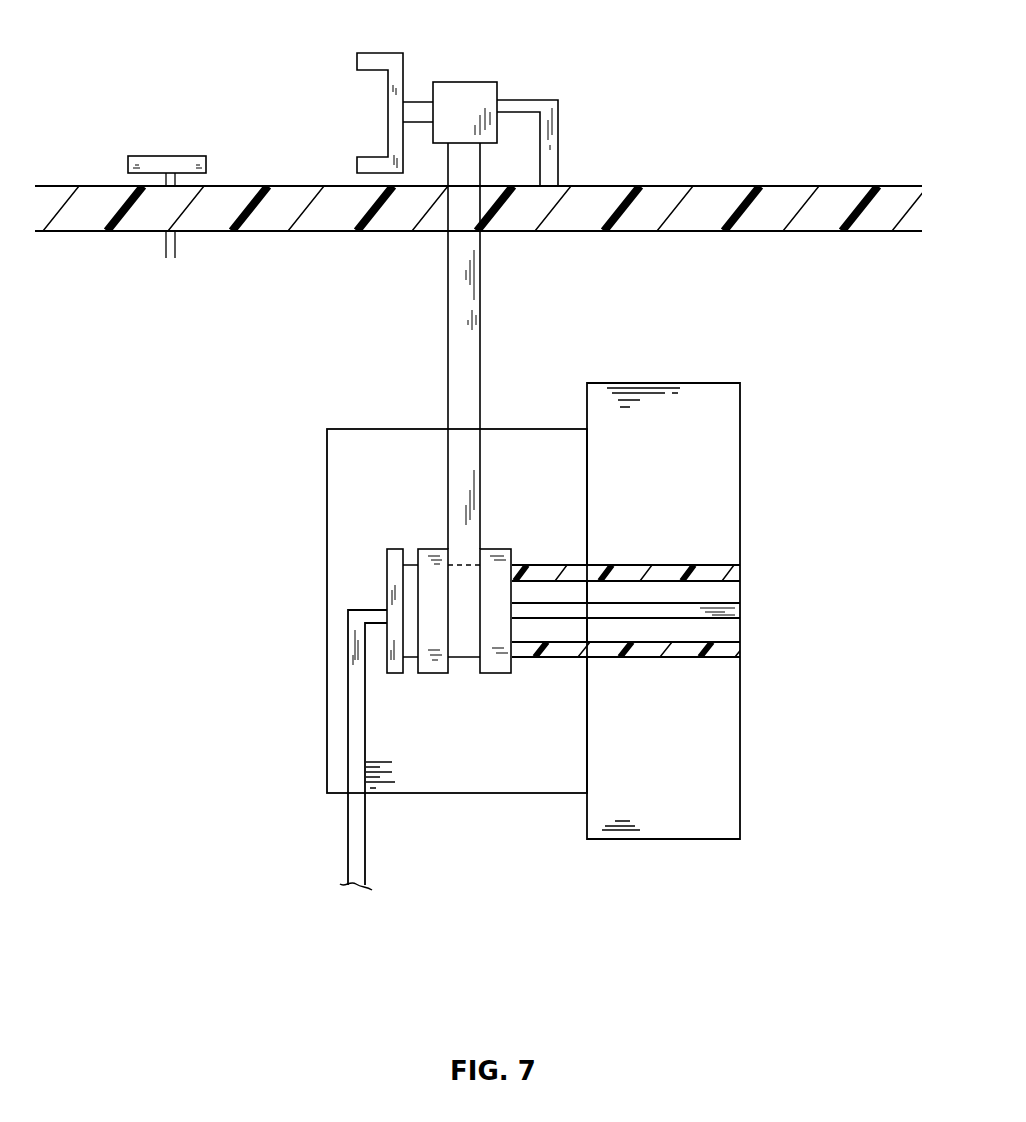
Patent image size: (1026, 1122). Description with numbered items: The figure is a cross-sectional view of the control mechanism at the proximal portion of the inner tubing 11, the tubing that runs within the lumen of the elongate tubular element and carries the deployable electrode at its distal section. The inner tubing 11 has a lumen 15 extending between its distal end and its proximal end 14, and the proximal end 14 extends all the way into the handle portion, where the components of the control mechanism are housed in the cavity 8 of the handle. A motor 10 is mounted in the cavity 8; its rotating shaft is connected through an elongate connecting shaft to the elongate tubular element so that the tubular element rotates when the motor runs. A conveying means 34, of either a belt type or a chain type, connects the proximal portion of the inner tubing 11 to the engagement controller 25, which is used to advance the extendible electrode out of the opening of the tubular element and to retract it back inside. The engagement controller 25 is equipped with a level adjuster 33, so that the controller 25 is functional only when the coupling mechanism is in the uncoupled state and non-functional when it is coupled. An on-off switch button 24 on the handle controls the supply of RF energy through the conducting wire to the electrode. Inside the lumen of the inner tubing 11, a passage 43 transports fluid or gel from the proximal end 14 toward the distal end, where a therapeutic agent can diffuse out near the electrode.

The cavity 8 is at (728, 270).
The on-off switch button 24 is at (207, 150).
The engagement controller 25 is at (497, 80).
The level adjuster 33 is at (558, 128).
The conveying means 34 is at (483, 350).
The motor 10 is at (717, 378).
The lumen 15 is at (682, 595).
The inner tubing 11 is at (683, 658).
The proximal end 14 is at (383, 665).
The passage 43 is at (565, 622).